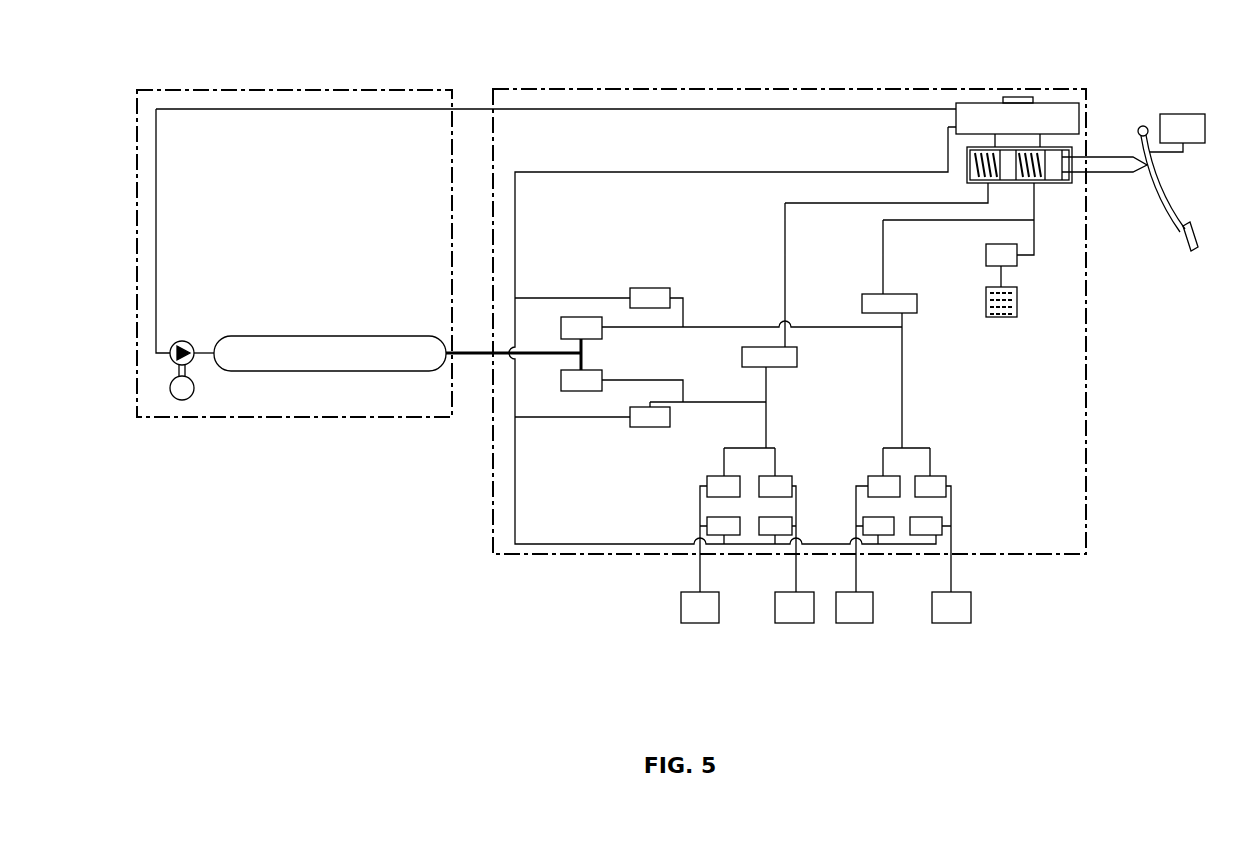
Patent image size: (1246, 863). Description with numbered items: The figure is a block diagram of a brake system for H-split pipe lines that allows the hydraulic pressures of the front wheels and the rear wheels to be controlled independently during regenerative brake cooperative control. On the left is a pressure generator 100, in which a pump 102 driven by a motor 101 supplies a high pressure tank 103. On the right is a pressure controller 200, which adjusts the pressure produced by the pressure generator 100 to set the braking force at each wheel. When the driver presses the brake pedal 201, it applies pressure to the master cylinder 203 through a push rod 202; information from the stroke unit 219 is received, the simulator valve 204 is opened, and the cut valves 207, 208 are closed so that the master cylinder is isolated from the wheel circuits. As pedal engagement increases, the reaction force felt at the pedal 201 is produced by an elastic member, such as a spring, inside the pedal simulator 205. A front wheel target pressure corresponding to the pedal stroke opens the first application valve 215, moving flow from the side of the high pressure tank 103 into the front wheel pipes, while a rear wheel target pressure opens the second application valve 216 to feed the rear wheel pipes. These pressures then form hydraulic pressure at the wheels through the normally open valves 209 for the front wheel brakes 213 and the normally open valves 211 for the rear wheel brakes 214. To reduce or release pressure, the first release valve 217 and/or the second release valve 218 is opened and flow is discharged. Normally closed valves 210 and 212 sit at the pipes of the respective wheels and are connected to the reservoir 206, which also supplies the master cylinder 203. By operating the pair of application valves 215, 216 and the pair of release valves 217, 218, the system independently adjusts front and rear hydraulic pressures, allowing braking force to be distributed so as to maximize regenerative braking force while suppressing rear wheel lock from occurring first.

The pressure generator 100 is at (455, 99).
The motor 101 is at (190, 398).
The pump 102 is at (183, 341).
The high pressure tank 103 is at (337, 336).
The pressure controller 200 is at (907, 88).
The brake pedal 201 is at (1179, 234).
The push rod 202 is at (1125, 173).
The master cylinder 203 is at (1060, 184).
The simulator valve 204 is at (986, 250).
The pedal simulator 205 is at (1003, 318).
The reservoir 206 is at (1064, 103).
The cut valve 207 is at (917, 305).
The cut valve 208 is at (797, 356).
The normally open valve 209 is at (890, 476).
The normally closed valve 210 is at (895, 517).
The normally open valve 211 is at (730, 476).
The normally closed valve 212 is at (757, 517).
The front wheel brakes 213 is at (945, 623).
The rear wheel brakes 214 is at (785, 623).
The first application valve 215 is at (576, 317).
The second application valve 216 is at (576, 391).
The first release valve 217 is at (651, 288).
The second release valve 218 is at (643, 427).
The stroke unit 219 is at (1185, 114).